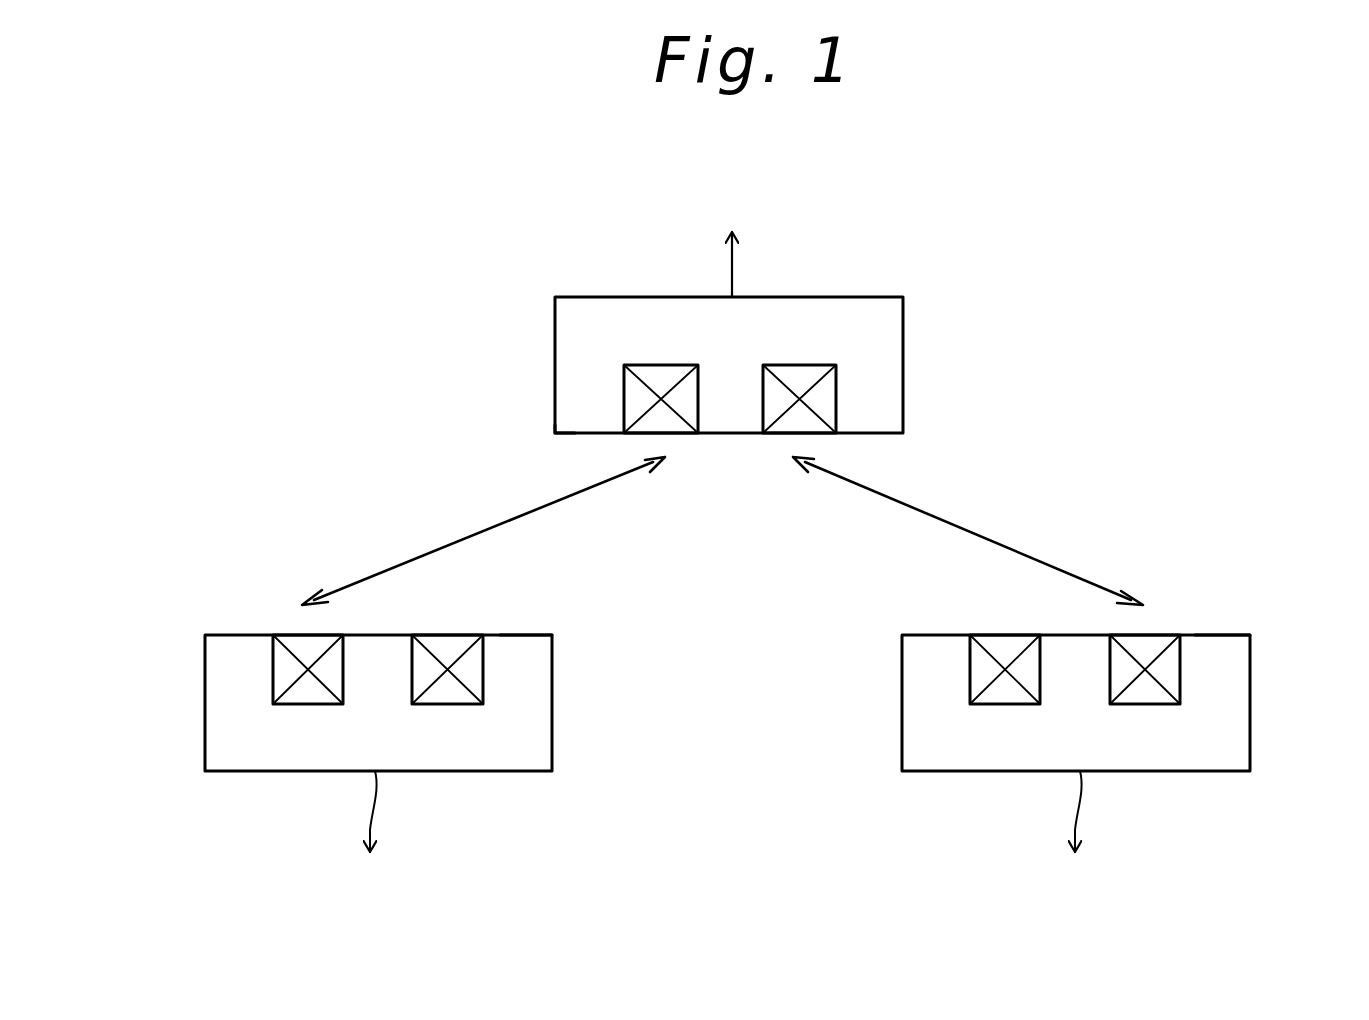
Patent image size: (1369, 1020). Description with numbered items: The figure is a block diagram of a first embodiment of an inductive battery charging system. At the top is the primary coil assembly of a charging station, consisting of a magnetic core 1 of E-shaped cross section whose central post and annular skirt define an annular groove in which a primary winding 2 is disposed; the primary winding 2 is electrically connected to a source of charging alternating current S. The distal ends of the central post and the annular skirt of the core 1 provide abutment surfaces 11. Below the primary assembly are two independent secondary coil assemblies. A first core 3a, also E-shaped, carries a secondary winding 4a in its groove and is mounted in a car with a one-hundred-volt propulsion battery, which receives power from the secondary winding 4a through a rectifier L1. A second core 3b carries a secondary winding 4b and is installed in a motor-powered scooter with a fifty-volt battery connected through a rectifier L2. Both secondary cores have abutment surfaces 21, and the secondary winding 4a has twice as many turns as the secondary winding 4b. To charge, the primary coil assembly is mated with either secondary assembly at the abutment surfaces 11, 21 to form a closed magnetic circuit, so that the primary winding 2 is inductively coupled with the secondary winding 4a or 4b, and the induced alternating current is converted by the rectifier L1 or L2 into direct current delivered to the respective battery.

The magnetic core 1 is at (890, 370).
The primary winding 2 is at (660, 378).
The abutment surfaces 11 is at (578, 435).
The abutment surfaces 21 is at (512, 635).
The first core 3a is at (527, 758).
The second core 3b is at (1235, 745).
The secondary winding 4a is at (467, 673).
The secondary winding 4b is at (1168, 669).
The source of charging alternating current S is at (727, 242).
The rectifier L1 is at (375, 841).
The rectifier L2 is at (1078, 841).